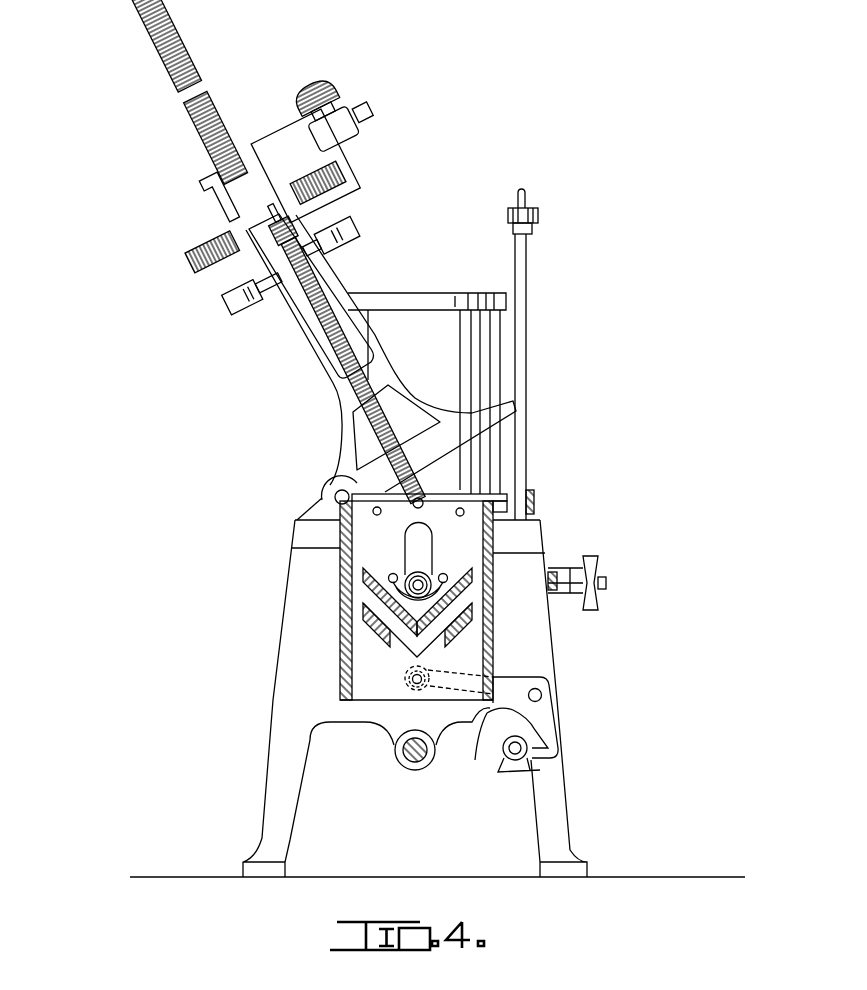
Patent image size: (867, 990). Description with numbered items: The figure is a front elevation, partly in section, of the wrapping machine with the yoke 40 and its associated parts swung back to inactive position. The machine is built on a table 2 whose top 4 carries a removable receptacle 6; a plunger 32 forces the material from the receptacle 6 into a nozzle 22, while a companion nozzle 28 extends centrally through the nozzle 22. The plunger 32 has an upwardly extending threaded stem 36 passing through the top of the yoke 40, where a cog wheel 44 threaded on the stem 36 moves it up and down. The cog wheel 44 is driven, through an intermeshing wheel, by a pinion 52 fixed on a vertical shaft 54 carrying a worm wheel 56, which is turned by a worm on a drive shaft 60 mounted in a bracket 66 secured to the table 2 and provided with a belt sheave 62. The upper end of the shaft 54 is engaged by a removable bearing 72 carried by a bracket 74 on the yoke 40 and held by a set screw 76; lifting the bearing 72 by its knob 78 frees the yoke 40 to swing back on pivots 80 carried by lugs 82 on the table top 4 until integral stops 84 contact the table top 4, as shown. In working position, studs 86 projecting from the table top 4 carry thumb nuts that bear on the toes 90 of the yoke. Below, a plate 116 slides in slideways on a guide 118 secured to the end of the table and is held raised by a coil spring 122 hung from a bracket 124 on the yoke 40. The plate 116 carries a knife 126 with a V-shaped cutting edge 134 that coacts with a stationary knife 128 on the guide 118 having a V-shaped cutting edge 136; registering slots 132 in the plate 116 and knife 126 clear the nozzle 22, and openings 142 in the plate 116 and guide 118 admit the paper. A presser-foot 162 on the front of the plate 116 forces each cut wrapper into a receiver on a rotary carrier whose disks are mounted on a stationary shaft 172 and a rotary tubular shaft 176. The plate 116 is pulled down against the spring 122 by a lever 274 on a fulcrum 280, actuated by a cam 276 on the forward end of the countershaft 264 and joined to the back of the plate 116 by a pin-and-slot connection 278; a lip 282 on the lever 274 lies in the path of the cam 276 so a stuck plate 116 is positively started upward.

The table 2 is at (437, 698).
The table top 4 is at (307, 545).
The removable receptacle 6 is at (425, 299).
The nozzle 22 is at (428, 576).
The nozzle 28 is at (392, 574).
The plunger 32 is at (231, 300).
The threaded stem 36 is at (165, 70).
The yoke 40 is at (233, 222).
The cog wheel 44 is at (188, 257).
The pinion 52 is at (538, 215).
The vertical shaft 54 is at (527, 330).
The worm wheel 56 is at (555, 577).
The drive shaft 60 is at (606, 582).
The sheave 62 is at (595, 568).
The bracket 66 is at (563, 597).
The removable bearing 72 is at (356, 150).
The bracket 74 is at (348, 115).
The set screw 76 is at (368, 112).
The knob 78 is at (330, 90).
The pivot 80 is at (338, 492).
The lug 82 is at (327, 502).
The stop 84 is at (317, 510).
The stud 86 is at (534, 503).
The toe 90 is at (518, 410).
The plate 116 is at (429, 522).
The guide 118 is at (345, 563).
The coil spring 122 is at (310, 330).
The bracket 124 is at (270, 226).
The knife 126 is at (387, 592).
The stationary knife 128 is at (382, 618).
The slot 132 is at (412, 532).
The V-shaped cutting edge 134 is at (387, 602).
The V-shaped cutting edge 136 is at (387, 637).
The opening 142 is at (380, 650).
The presser-foot 162 is at (437, 613).
The stationary shaft 172 is at (403, 752).
The rotary tubular shaft 176 is at (412, 762).
The countershaft 264 is at (504, 772).
The lever 274 is at (548, 722).
The cam 276 is at (512, 778).
The pin-and-slot connection 278 is at (403, 680).
The fulcrum 280 is at (547, 695).
The lip 282 is at (475, 760).